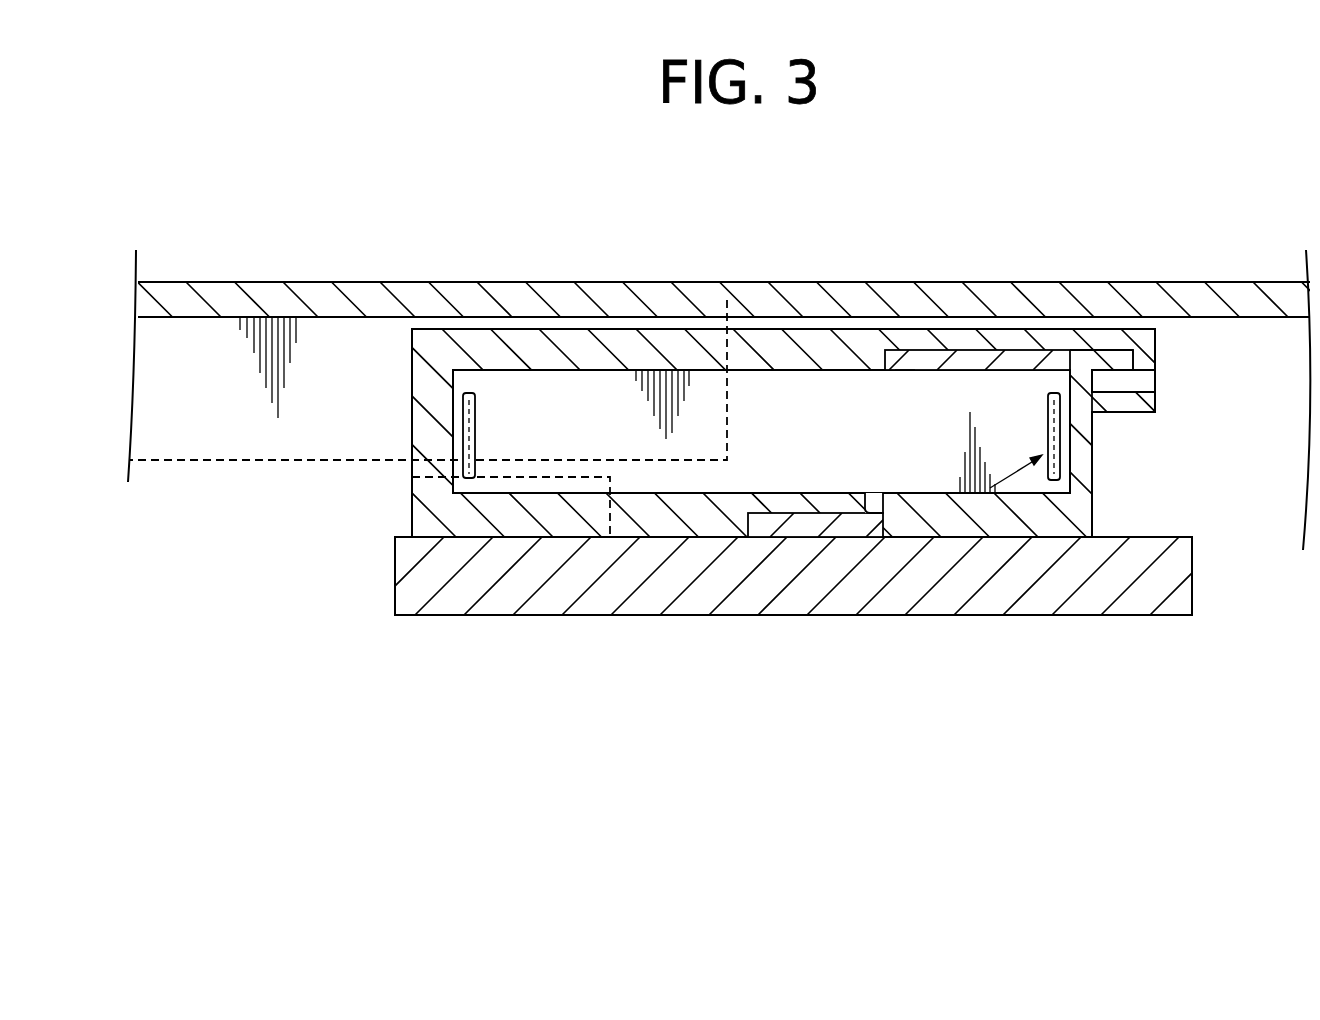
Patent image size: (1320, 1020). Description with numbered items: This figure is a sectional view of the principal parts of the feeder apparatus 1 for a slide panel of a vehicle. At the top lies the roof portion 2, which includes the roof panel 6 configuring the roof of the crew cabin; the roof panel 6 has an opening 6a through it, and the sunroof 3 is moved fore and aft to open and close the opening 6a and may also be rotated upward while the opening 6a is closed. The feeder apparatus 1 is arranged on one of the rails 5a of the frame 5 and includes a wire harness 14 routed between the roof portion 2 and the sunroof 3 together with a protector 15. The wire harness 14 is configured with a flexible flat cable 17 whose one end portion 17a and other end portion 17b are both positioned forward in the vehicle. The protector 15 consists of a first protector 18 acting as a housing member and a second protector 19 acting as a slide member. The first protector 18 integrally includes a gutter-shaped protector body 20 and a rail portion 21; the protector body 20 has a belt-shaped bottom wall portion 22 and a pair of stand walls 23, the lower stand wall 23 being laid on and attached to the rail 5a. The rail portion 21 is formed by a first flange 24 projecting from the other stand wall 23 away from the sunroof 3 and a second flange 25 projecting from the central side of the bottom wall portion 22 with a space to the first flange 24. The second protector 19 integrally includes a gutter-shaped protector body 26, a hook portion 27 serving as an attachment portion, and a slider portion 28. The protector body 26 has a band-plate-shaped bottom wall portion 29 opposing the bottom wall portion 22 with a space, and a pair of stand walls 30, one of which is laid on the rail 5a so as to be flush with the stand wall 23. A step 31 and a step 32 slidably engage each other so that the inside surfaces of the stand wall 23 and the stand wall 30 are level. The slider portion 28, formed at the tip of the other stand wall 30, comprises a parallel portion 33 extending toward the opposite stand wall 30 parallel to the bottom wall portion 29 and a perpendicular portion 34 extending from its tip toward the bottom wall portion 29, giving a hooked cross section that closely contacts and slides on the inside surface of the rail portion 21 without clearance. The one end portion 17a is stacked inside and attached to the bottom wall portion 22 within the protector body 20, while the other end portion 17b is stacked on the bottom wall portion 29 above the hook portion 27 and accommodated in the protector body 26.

The feeder apparatus 1 is at (784, 442).
The roof portion 2 is at (1230, 280).
The sunroof 3 is at (368, 390).
The frame 5 is at (543, 617).
The rail 5a is at (623, 587).
The roof panel 6 is at (1040, 282).
The opening 6a is at (727, 300).
The wire harness 14 is at (990, 488).
The protector 15 is at (742, 322).
The flexible flat cable 17 is at (1053, 492).
The one end portion 17a is at (1062, 442).
The other end portion 17b is at (478, 405).
The first protector 18 is at (1093, 505).
The second protector 19 is at (783, 327).
The protector body 20 is at (1092, 527).
The rail portion 21 is at (1123, 413).
The bottom wall portion 22 is at (1078, 470).
The stand wall 23 is at (972, 350).
The first flange 24 is at (1123, 362).
The second flange 25 is at (1143, 398).
The protector body 26 is at (680, 330).
The hook portion 27 is at (510, 538).
The slider portion 28 is at (1110, 323).
The bottom wall portion 29 is at (477, 332).
The stand wall 30 is at (630, 333).
The step 31 is at (865, 490).
The step 32 is at (905, 372).
The parallel portion 33 is at (1147, 340).
The perpendicular portion 34 is at (1128, 408).